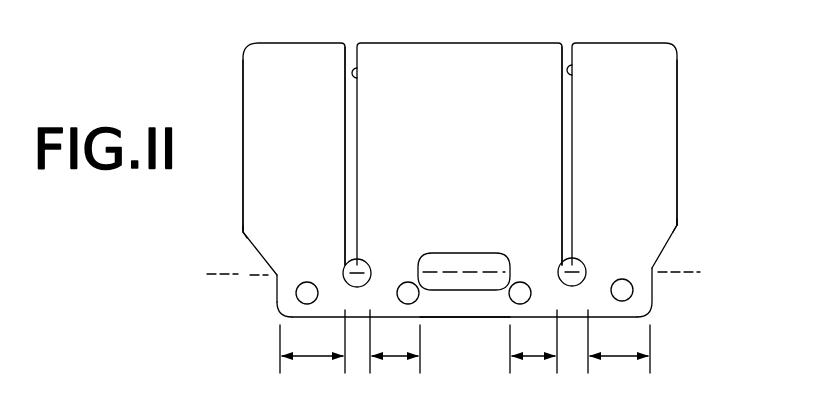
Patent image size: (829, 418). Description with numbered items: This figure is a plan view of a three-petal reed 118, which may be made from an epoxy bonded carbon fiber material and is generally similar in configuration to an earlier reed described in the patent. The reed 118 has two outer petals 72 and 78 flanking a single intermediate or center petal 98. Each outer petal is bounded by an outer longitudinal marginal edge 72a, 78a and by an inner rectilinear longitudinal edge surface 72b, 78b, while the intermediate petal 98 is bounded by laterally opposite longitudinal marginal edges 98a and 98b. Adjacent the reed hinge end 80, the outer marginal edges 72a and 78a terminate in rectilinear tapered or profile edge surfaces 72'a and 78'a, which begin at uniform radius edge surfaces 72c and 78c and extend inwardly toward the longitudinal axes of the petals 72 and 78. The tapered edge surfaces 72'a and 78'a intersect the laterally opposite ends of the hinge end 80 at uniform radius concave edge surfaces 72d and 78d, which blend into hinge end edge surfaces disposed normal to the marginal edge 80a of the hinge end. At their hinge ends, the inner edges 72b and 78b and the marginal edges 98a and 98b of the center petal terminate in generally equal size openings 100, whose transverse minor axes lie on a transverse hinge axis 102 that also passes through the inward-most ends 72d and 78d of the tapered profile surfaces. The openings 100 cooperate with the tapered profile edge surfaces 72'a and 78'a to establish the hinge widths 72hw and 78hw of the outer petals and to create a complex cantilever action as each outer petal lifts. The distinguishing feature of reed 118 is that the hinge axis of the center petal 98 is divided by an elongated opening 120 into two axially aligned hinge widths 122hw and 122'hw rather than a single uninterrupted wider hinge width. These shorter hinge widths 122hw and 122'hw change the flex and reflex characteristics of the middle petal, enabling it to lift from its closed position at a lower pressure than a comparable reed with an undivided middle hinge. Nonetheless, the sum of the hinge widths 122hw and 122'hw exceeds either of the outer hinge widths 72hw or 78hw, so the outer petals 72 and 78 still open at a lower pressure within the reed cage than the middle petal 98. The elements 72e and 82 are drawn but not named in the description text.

The reed 118 is at (215, 52).
The outer petal 72 is at (294, 132).
The outer longitudinal marginal edge 72a is at (243, 92).
The inner rectilinear longitudinal edge surface 72b is at (345, 55).
The uniform radius edge surface 72c is at (243, 232).
The tapered edge surface 72'a is at (212, 253).
The uniform radius concave edge surface 72d is at (274, 281).
The first contact tail rounded corner 72e is at (276, 297).
The hinge width 72hw is at (310, 358).
The transverse hinge axis 102 is at (242, 277).
The intermediate reed petal 98 is at (460, 50).
The longitudinal marginal edge 98a is at (356, 78).
The longitudinal marginal edge 98b is at (562, 58).
The outer petal 78 is at (627, 132).
The outer longitudinal marginal edge 78a is at (677, 65).
The inner rectilinear longitudinal edge surface 78b is at (573, 68).
The uniform radius edge surface 78c is at (678, 230).
The tapered edge surface 78'a is at (690, 246).
The uniform radius concave edge surface 78d is at (655, 272).
The hinge width 78hw is at (617, 358).
The reed hinge end 80 is at (438, 303).
The marginal edge of the hinge end 80a is at (483, 318).
The mounting hole 82 is at (621, 301).
The opening 100 is at (347, 268).
The elongated opening 120 is at (466, 251).
The hinge width 122hw is at (392, 360).
The hinge width 122'hw is at (540, 357).